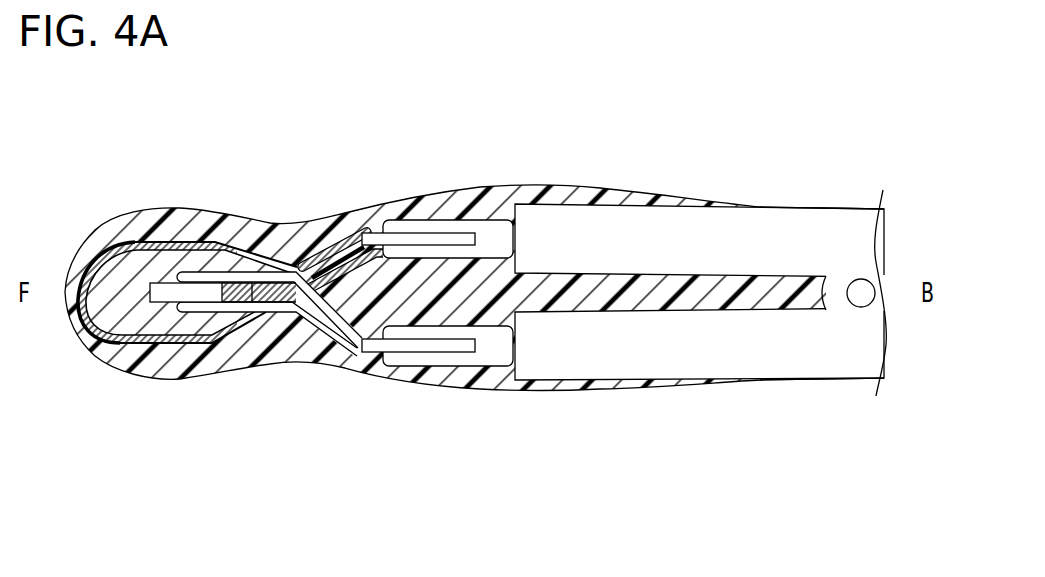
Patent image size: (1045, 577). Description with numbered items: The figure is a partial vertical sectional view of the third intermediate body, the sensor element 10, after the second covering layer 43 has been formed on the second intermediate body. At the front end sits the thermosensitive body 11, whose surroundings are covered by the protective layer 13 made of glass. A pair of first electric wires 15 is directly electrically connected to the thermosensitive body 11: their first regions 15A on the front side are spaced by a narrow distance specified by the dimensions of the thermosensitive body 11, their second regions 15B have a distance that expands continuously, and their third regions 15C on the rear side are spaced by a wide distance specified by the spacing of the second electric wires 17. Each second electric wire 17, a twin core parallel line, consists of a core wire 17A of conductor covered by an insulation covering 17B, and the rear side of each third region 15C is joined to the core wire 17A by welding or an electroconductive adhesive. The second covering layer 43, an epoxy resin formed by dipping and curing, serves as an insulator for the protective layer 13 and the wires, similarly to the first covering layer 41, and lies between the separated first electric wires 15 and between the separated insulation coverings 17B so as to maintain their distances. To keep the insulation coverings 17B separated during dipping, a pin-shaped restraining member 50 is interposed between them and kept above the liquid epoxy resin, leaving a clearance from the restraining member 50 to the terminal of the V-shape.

The sensor element 10 is at (832, 202).
The thermosensitive body 11 is at (178, 303).
The protective layer 13 is at (178, 240).
The first electric wire 15 is at (298, 291).
The first region 15A is at (285, 265).
The second region 15B is at (320, 263).
The third region 15C is at (381, 222).
The second electric wire 17 is at (623, 293).
The core wire 17A is at (490, 207).
The insulation covering 17B is at (566, 205).
The first covering layer 41 is at (133, 346).
The second covering layer 43 is at (97, 352).
The restraining member 50 is at (848, 280).